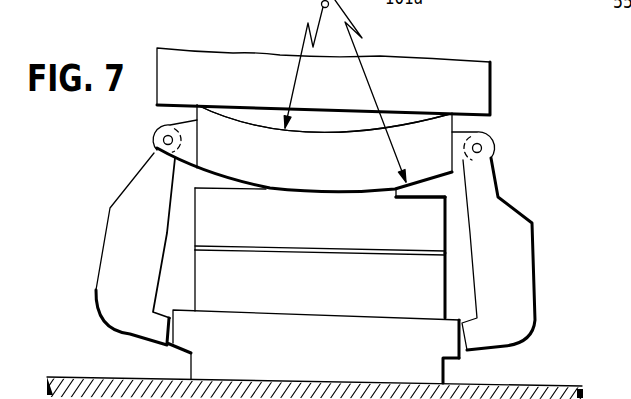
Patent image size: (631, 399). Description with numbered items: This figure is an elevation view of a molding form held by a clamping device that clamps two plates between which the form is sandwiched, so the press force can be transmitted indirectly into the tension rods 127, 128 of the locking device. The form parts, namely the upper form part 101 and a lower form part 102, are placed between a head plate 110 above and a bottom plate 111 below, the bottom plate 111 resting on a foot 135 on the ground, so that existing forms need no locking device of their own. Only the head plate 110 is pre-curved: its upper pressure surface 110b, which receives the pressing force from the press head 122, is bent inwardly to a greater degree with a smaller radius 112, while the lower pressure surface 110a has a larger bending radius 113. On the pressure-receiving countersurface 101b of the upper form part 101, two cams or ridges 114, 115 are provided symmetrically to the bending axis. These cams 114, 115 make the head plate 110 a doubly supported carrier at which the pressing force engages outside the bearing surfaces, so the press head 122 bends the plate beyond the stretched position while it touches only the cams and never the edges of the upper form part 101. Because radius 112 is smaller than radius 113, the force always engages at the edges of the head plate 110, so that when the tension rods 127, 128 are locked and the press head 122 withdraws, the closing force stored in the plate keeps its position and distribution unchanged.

The upper form part 101 is at (335, 232).
The pressure receiving countersurface 101b is at (437, 195).
The intermediate block 102 is at (330, 292).
The head plate 110 is at (247, 138).
The pressure surface 110a is at (223, 178).
The pressure surface 110b is at (318, 133).
The bottom plate 111 is at (325, 360).
The radius 112 is at (301, 53).
The bending radius 113 is at (358, 54).
The cam or ridge 114 is at (260, 182).
The cam or ridge 115 is at (383, 195).
The press head 122 is at (478, 77).
The tension rod 127 is at (113, 272).
The tension rod 128 is at (520, 260).
The foot of base 135 is at (453, 360).